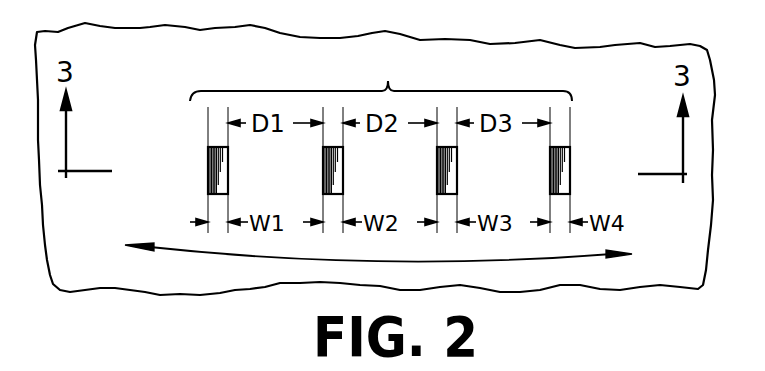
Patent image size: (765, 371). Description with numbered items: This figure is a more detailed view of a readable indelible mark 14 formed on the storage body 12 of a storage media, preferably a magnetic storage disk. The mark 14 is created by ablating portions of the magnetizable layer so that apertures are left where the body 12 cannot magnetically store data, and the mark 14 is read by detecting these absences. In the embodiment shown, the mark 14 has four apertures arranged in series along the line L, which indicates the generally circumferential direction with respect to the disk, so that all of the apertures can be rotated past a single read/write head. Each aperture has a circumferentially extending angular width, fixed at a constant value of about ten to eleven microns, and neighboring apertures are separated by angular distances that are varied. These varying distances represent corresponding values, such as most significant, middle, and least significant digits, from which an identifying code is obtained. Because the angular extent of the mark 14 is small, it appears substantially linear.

The storage body 12 is at (114, 261).
The readable indelible mark 14 is at (403, 72).
The line L is at (175, 248).